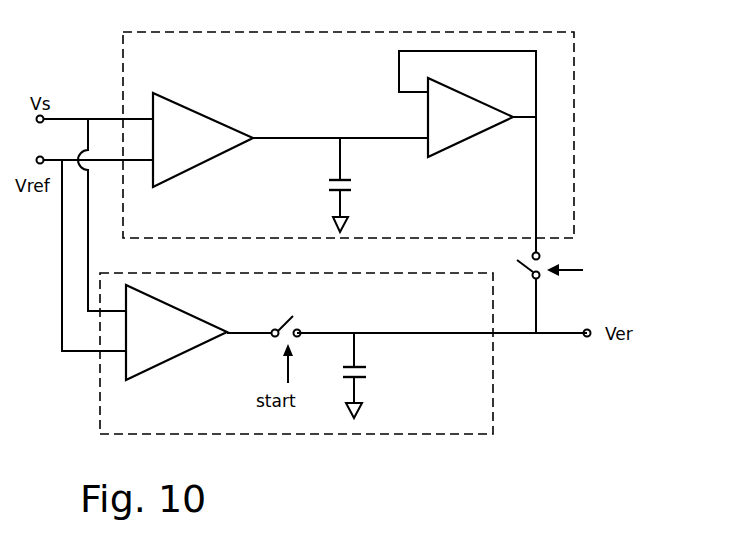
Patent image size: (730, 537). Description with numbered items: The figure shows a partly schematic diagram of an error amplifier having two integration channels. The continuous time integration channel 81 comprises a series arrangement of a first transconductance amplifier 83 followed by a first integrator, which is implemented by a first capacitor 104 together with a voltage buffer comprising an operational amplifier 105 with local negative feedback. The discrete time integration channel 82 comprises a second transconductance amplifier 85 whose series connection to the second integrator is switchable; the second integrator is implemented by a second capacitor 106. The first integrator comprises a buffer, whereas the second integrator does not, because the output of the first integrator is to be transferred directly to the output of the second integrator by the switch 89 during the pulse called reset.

The continuous time integration channel 81 is at (168, 68).
The discrete time integration channel 82 is at (141, 423).
The first transconductance amplifier 83 is at (197, 111).
The second transconductance amplifier 85 is at (180, 307).
The switch 89 is at (548, 273).
The capacitor Cin1 104 is at (322, 175).
The operational amplifier 105 is at (482, 131).
The second capacitor Cin2 106 is at (360, 385).